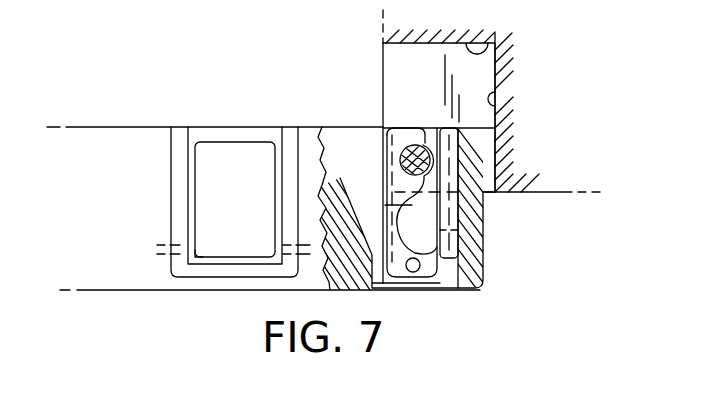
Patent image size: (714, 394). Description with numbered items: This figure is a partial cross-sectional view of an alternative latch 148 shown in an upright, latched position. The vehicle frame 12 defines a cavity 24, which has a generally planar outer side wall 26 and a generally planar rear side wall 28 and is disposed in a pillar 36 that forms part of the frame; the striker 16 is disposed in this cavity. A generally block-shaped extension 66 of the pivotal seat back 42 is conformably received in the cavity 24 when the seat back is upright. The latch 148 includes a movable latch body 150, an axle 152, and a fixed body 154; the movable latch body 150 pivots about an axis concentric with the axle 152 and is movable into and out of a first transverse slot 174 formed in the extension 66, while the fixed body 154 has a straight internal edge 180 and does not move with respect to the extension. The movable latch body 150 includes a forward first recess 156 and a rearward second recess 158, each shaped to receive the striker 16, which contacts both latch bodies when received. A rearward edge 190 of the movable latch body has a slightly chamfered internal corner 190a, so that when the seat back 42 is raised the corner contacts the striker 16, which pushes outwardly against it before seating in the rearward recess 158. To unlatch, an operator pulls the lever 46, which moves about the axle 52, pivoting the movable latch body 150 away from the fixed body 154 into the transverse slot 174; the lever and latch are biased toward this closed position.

The vehicle frame 12 is at (380, 32).
The striker 16 is at (445, 156).
The cavity 24 is at (505, 60).
The outer side wall 26 is at (505, 92).
The rear side wall 28 is at (498, 45).
The pillar 36 is at (555, 192).
The seat back 42 is at (115, 270).
The lever 46 is at (212, 158).
The axle 52 is at (205, 250).
The extension 66 is at (485, 285).
The latch 148 is at (357, 120).
The movable latch body 150 is at (397, 183).
The axle 152 is at (418, 272).
The fixed body 154 is at (448, 212).
The first recess 156 is at (402, 233).
The second recess 158 is at (413, 146).
The first transverse slot 174 is at (343, 190).
The straight internal edge 180 is at (437, 172).
The rearward edge 190 is at (405, 133).
The chamfered internal corner 190a is at (416, 145).